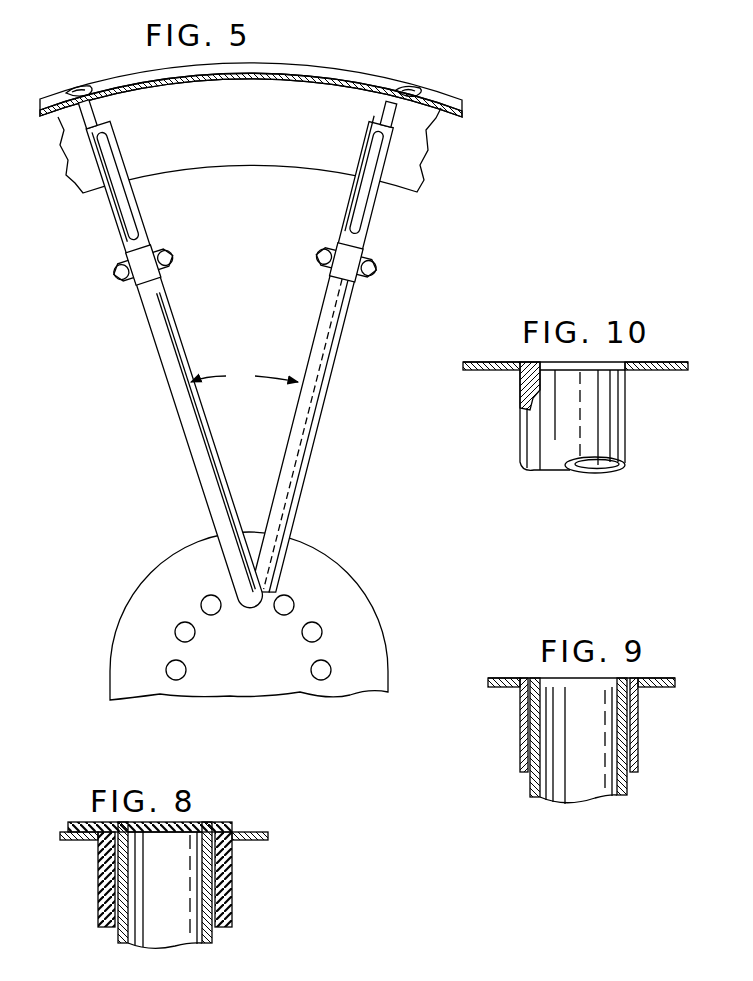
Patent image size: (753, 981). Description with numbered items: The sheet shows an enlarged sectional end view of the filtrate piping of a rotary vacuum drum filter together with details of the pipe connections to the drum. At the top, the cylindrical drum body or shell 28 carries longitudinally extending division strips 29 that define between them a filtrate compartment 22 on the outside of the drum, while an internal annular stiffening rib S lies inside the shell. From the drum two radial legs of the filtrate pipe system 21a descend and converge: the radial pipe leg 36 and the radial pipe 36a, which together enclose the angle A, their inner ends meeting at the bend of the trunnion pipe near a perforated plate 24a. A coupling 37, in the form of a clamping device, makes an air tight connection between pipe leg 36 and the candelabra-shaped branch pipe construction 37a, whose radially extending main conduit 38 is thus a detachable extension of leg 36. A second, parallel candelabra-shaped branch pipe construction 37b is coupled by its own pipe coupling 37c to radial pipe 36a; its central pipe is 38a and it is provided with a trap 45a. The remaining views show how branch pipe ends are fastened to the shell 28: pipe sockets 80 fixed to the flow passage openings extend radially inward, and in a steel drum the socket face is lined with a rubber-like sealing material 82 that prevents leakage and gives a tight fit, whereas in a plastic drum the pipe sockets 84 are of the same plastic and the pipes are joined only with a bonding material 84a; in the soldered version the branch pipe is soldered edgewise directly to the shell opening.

In FIG. 5, the filtrate compartment 22 is at (272, 67).
In FIG. 5, the drum body or shell 28 is at (255, 80).
In FIG. 10, the drum body or shell 28 is at (490, 375).
In FIG. 8, the drum body or shell 28 is at (76, 843).
In FIG. 5, the division strip 29 is at (84, 89).
In FIG. 5, the trap 45a is at (360, 158).
In FIG. 5, the internal annular stiffening rib S is at (259, 168).
In FIG. 5, the central pipe 38a is at (178, 212).
In FIG. 5, the main conduit 38 is at (370, 228).
In FIG. 5, the candelabra-shaped branch pipe construction 37a is at (112, 246).
In FIG. 5, the second candelabra-shaped branch pipe construction 37b is at (376, 277).
In FIG. 5, the coupling 37 is at (343, 290).
In FIG. 5, the pipe coupling 37c is at (387, 320).
In FIG. 5, the strut assembly 21a is at (240, 359).
In FIG. 5, the radial pipe leg 36 is at (156, 359).
In FIG. 5, the radial pipe 36a is at (356, 356).
In FIG. 5, the enclosed angle A is at (244, 376).
In FIG. 5, the perforated disc 24a is at (266, 662).
In FIG. 9, the pipe socket 84 is at (520, 738).
In FIG. 9, the bonding material 84a is at (530, 775).
In FIG. 8, the sealing material 82 is at (222, 825).
In FIG. 8, the pipe socket 80 is at (98, 893).